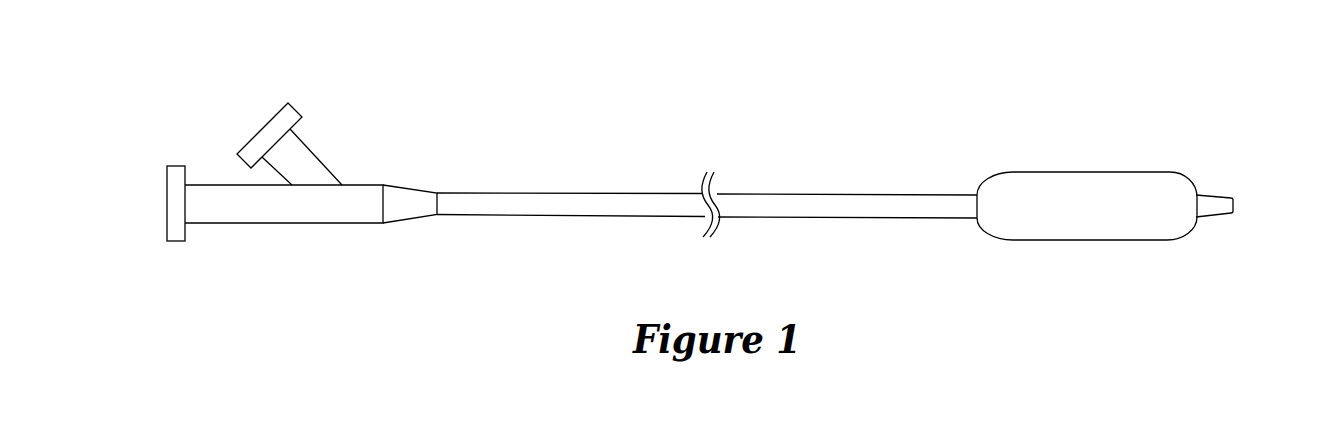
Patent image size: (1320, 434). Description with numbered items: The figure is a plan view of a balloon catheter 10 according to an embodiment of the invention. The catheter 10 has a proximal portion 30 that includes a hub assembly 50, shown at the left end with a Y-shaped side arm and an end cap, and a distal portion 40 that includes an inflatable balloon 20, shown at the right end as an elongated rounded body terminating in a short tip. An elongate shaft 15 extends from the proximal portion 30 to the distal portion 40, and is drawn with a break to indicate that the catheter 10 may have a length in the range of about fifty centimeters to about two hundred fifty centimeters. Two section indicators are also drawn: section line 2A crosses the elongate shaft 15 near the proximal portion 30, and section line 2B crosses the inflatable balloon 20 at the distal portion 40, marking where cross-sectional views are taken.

The catheter 10 is at (772, 138).
The elongate shaft 15 is at (845, 217).
The inflatable balloon 20 is at (998, 165).
The proximal portion 30 is at (457, 182).
The distal portion 40 is at (1208, 242).
The hub assembly 50 is at (260, 264).
The section line 2A is at (612, 272).
The section line 2B is at (1122, 273).